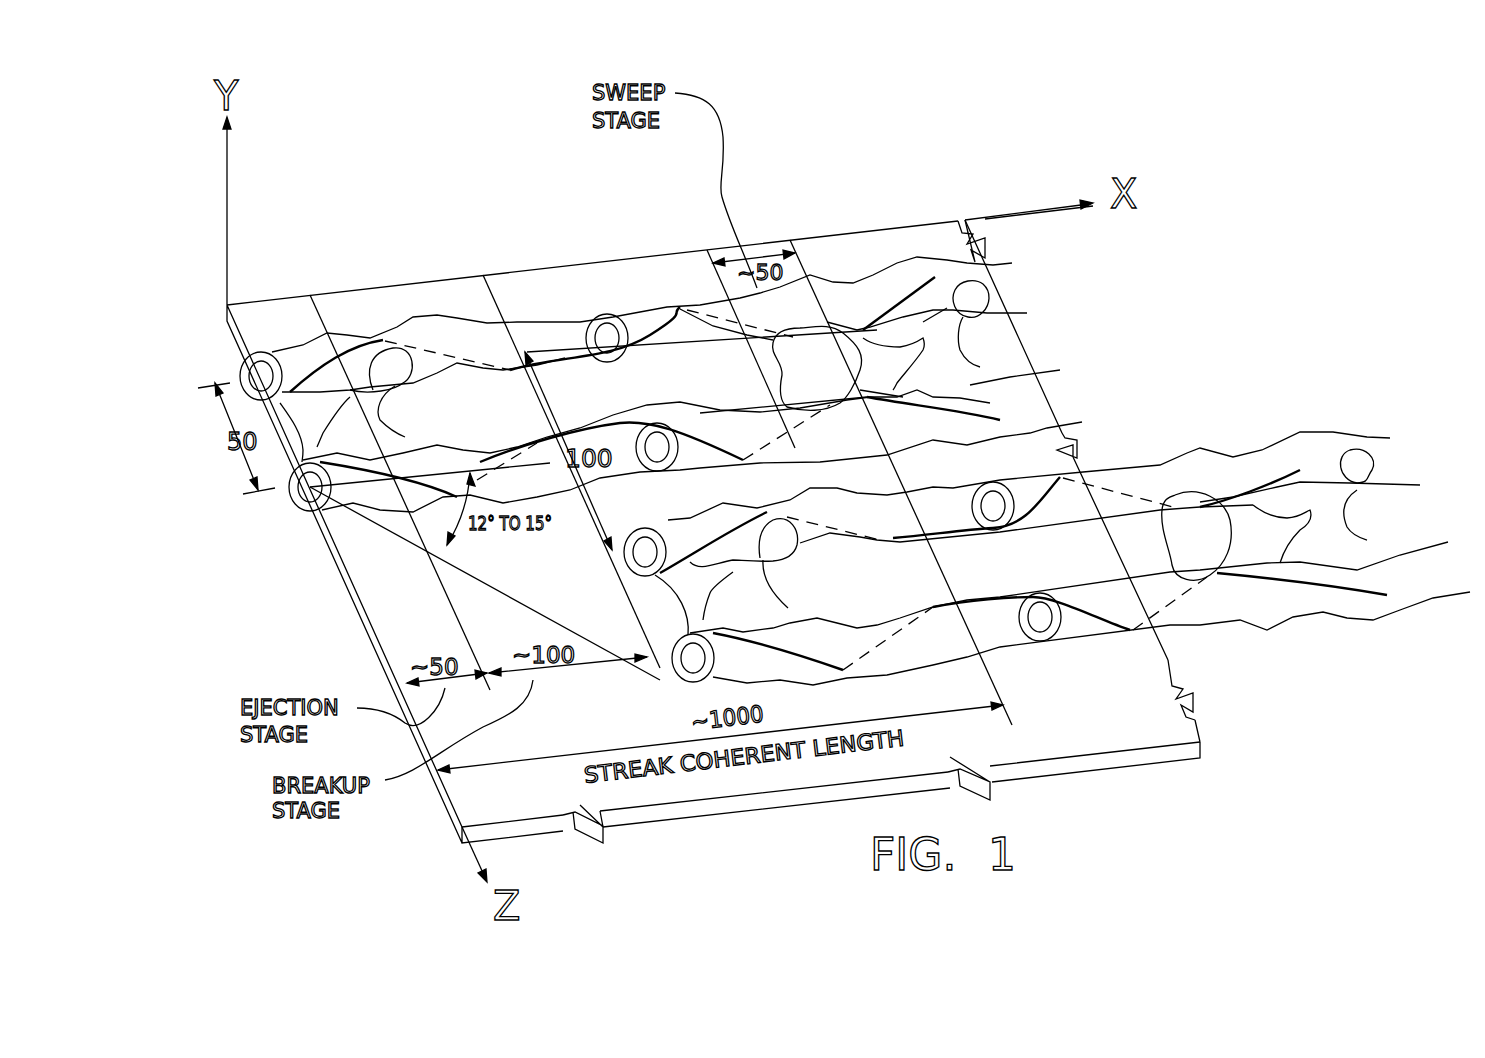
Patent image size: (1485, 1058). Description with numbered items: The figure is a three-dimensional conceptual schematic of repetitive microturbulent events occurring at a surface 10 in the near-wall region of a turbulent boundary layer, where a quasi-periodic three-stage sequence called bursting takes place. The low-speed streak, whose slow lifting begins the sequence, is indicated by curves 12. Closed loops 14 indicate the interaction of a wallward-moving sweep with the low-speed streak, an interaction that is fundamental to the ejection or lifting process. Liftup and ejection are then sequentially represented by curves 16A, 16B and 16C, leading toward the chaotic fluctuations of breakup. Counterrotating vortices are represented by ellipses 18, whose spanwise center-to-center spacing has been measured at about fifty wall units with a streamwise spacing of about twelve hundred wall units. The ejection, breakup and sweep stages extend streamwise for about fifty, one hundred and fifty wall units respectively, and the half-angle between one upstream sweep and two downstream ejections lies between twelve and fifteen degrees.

The surface 10 is at (343, 570).
The low-speed streak 12 is at (640, 440).
The closed loops 14 is at (673, 307).
The liftup and ejection curve 16A is at (870, 410).
The liftup and ejection curve 16B is at (900, 345).
The liftup and ejection curve 16C is at (987, 288).
The ellipses 18 is at (245, 375).